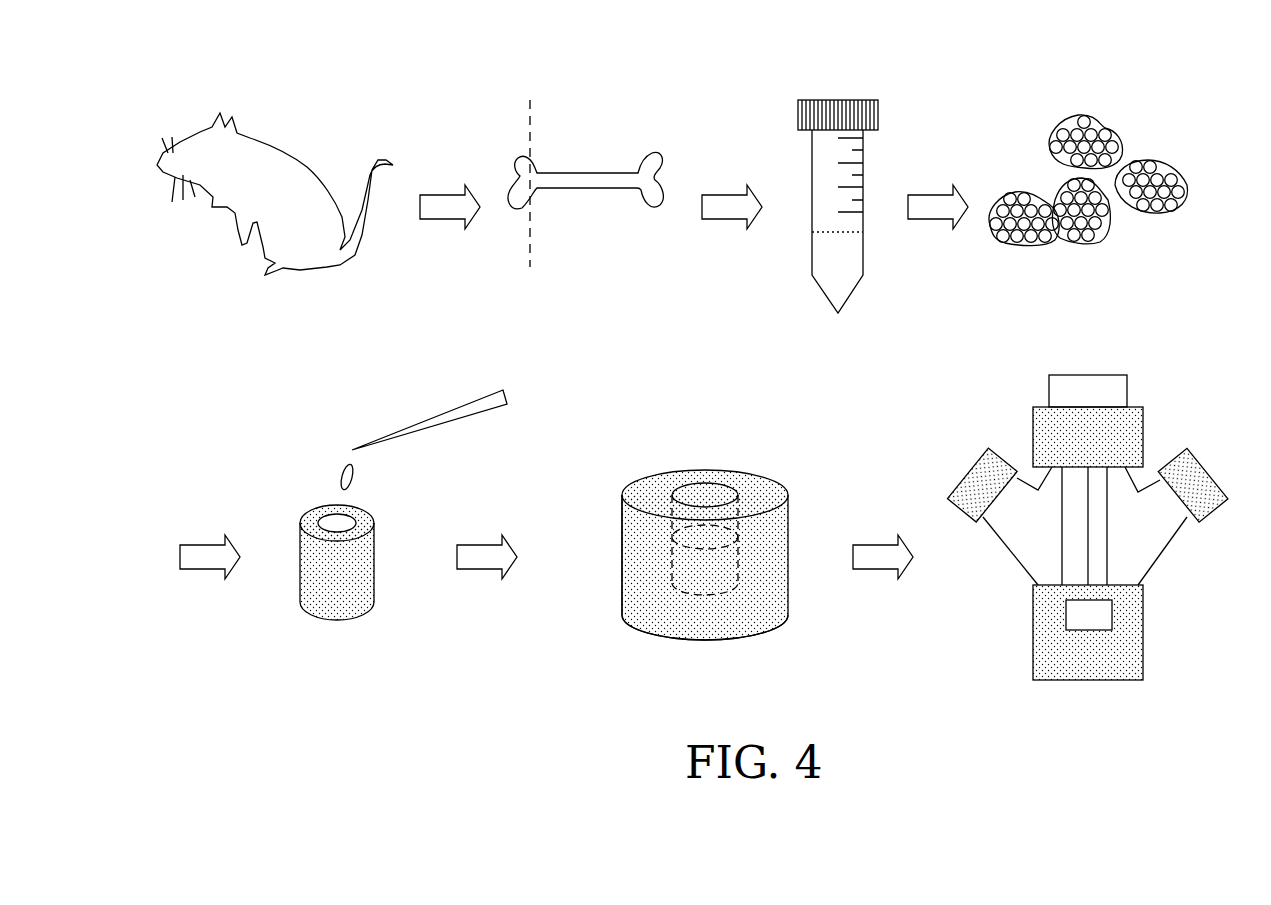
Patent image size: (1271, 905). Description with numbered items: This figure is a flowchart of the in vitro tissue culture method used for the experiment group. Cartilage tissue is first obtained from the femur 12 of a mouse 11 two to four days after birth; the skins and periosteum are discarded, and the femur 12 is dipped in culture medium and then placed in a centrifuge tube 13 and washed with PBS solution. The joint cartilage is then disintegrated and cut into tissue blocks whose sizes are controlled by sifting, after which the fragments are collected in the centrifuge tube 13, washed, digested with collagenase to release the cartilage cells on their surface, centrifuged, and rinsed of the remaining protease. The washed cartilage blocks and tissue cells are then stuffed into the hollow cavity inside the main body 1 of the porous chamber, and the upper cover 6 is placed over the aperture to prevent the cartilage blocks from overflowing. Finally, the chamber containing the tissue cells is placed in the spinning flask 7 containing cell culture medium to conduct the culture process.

The main body 1 is at (709, 552).
The upper cover 6 is at (698, 490).
The spinning flask 7 is at (1100, 527).
The mouse 11 is at (273, 146).
The femur 12 is at (594, 172).
The centrifuge tube 13 is at (838, 100).